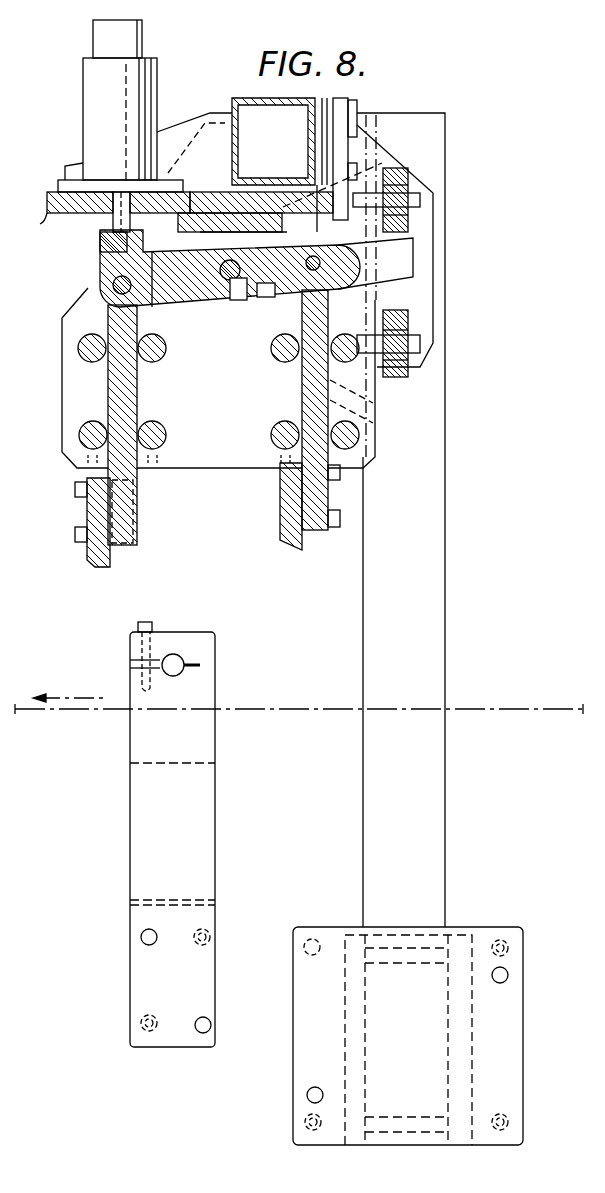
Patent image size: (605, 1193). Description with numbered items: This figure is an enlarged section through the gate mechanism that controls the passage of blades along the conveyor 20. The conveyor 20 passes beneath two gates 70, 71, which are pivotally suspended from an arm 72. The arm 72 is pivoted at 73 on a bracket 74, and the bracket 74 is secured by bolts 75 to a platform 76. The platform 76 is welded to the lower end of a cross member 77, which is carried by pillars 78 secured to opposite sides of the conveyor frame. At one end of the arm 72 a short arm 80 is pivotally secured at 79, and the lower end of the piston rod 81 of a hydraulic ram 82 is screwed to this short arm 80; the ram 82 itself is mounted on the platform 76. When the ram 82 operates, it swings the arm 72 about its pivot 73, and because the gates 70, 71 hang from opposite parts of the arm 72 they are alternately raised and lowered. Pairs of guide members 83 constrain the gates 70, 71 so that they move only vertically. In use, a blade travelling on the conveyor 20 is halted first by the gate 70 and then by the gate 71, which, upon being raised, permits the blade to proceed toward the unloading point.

The conveyor 20 is at (295, 708).
The gate 70 is at (320, 413).
The gate 71 is at (130, 505).
The arm 72 is at (160, 300).
The pivot 73 is at (243, 296).
The bracket 74 is at (222, 205).
The bolts 75 is at (382, 163).
The platform 76 is at (60, 208).
The cross member 77 is at (280, 98).
The pillars 78 is at (437, 484).
The pivot 79 is at (100, 283).
The short arm 80 is at (104, 250).
The piston rod 81 is at (114, 214).
The hydraulic ram 82 is at (103, 136).
The guide members 83 is at (88, 352).